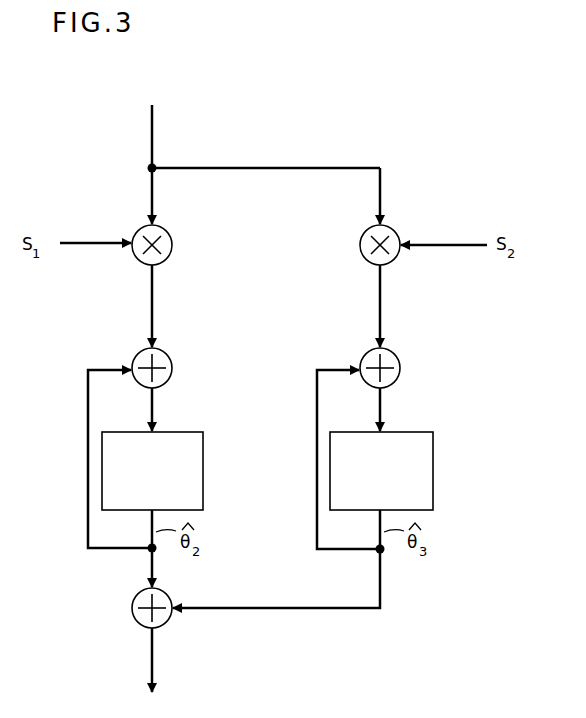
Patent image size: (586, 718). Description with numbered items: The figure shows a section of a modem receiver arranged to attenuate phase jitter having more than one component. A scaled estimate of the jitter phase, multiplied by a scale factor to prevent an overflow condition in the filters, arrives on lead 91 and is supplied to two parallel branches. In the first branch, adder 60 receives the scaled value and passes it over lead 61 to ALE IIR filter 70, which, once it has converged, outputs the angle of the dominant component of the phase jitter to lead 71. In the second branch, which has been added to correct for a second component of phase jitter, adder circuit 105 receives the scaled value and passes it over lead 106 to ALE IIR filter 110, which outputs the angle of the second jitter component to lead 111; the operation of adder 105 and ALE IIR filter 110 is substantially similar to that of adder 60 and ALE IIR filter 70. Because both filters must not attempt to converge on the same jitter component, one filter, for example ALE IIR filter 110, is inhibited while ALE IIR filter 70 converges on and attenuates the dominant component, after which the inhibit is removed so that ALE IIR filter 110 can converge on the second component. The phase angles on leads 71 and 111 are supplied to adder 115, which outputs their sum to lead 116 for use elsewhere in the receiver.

The lead 91 is at (150, 162).
The adder 60 is at (170, 362).
The lead 61 is at (156, 406).
The ALE IIR filter 70 is at (132, 432).
The lead 71 is at (146, 584).
The adder 115 is at (168, 594).
The lead 116 is at (148, 675).
The adder circuit 105 is at (399, 362).
The lead 106 is at (384, 406).
The ALE IIR filter 110 is at (436, 458).
The lead 111 is at (385, 585).